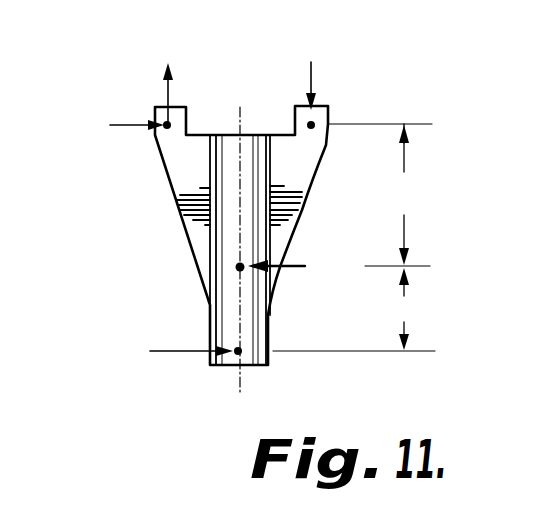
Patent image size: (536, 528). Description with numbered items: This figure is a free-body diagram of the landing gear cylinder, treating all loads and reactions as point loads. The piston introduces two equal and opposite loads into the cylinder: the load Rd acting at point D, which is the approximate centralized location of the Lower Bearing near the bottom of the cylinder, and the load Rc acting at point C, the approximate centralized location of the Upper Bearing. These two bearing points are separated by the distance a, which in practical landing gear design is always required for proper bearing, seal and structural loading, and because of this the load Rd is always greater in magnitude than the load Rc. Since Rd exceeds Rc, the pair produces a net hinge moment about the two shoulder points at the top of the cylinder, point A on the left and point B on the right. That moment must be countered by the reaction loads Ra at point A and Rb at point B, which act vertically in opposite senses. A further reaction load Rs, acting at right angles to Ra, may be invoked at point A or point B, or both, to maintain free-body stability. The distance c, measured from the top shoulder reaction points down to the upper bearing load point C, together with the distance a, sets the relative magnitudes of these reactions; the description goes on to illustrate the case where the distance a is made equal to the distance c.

The point A is at (167, 127).
The point B is at (311, 125).
The point C is at (240, 267).
The point D is at (235, 356).
The reaction load Ra is at (173, 76).
The reaction load Rb is at (309, 69).
The load Rc is at (301, 273).
The load Rd is at (168, 356).
The reaction load Rs is at (114, 128).
The distance a is at (402, 309).
The distance c is at (401, 194).